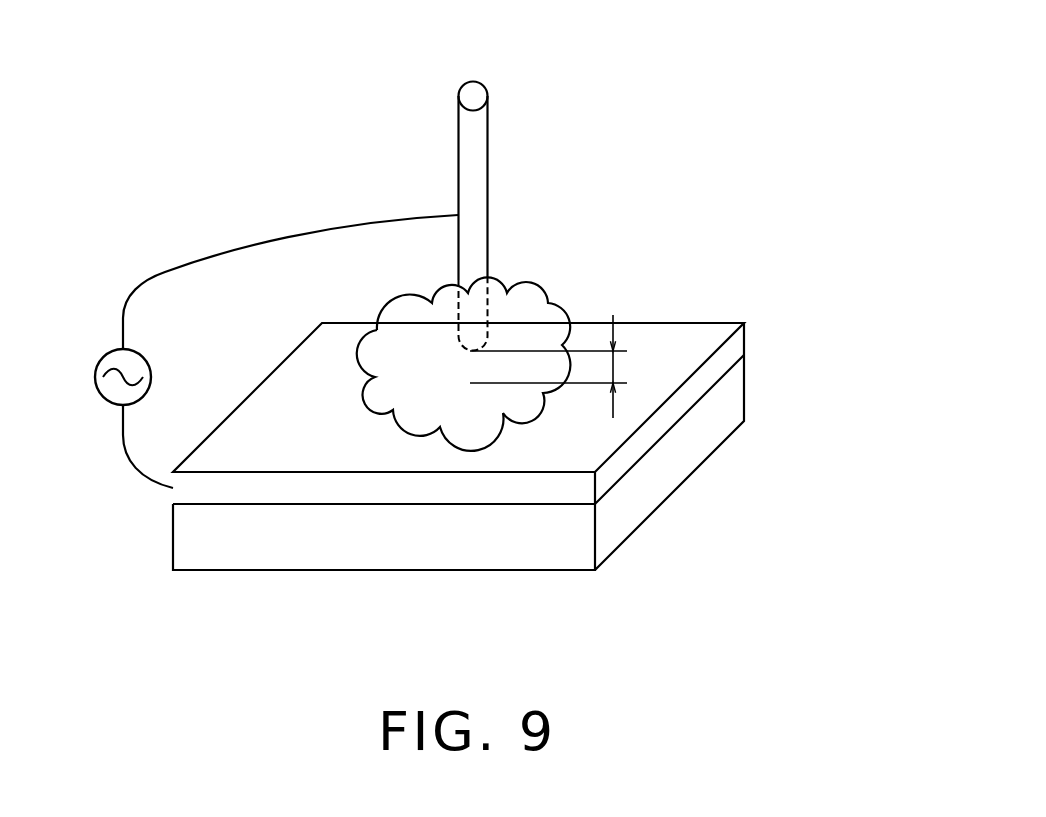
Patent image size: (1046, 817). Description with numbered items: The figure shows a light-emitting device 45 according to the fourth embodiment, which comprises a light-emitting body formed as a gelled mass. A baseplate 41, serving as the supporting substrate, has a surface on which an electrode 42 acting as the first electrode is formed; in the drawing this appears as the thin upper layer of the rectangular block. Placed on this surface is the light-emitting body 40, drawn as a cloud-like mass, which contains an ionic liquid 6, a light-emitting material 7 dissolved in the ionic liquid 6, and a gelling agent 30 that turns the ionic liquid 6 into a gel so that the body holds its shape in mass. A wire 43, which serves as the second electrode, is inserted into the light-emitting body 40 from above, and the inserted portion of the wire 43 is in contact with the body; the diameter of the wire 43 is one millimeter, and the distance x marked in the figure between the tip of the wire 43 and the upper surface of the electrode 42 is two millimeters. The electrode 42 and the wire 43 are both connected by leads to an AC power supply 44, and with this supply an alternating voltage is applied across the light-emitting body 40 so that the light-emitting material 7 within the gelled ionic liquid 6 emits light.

The light-emitting device 45 is at (843, 142).
The light-emitting body 40 is at (728, 215).
The baseplate 41 is at (185, 543).
The electrode 42 is at (185, 493).
The wire 43 is at (478, 137).
The AC power supply 44 is at (95, 368).
The ionic liquid 6 is at (509, 337).
The light-emitting material 7 is at (509, 337).
The gelling agent 30 is at (530, 283).